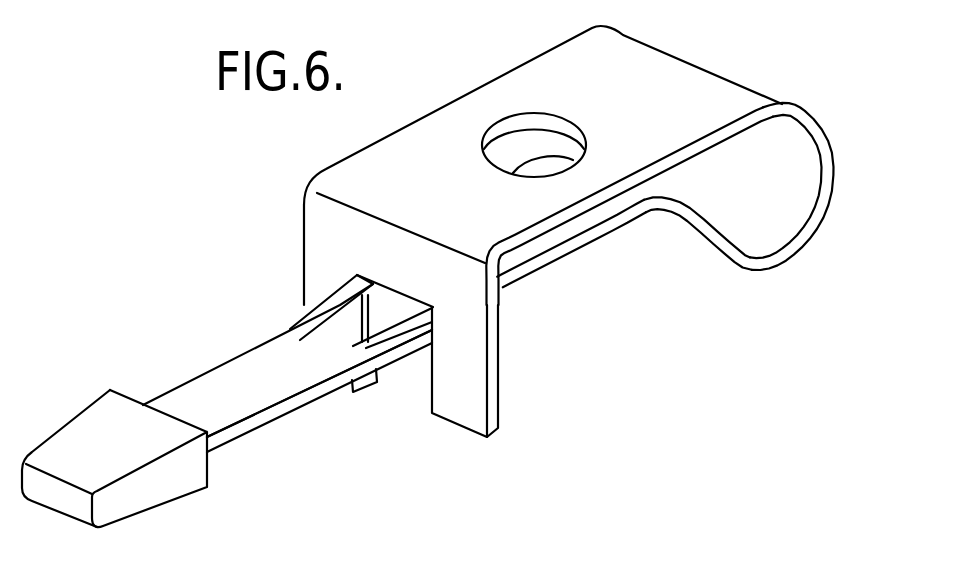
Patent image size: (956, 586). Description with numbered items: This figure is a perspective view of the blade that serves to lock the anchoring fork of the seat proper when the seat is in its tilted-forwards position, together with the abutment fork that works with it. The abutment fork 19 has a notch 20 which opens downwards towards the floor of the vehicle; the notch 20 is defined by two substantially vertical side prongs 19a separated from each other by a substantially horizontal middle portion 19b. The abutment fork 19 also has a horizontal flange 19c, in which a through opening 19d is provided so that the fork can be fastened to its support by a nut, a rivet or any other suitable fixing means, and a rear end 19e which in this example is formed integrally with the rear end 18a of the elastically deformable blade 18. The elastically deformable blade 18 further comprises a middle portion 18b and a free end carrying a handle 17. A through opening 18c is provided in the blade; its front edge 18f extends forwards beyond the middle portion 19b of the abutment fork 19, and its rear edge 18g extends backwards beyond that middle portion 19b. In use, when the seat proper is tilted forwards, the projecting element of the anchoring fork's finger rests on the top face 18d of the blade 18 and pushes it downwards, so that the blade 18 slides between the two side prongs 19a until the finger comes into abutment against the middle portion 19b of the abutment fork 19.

The handle 17 is at (110, 422).
The elastically deformable blade 18 is at (153, 361).
The rear end of the elastically deformable blade 18a is at (745, 272).
The middle portion of the elastically deformable blade 18b is at (570, 253).
The through opening 18c is at (350, 329).
The top face of the elastically deformable blade 18d is at (233, 385).
The front edge of the through opening 18f is at (300, 342).
The rear edge of the through opening 18g is at (393, 297).
The abutment fork 19 is at (292, 214).
The side prongs 19a is at (458, 402).
The middle portion of the abutment fork 19b is at (357, 275).
The horizontal flange 19c is at (450, 155).
The through opening 19d is at (522, 145).
The rear end of the abutment fork 19e is at (797, 118).
The notch 20 is at (388, 418).